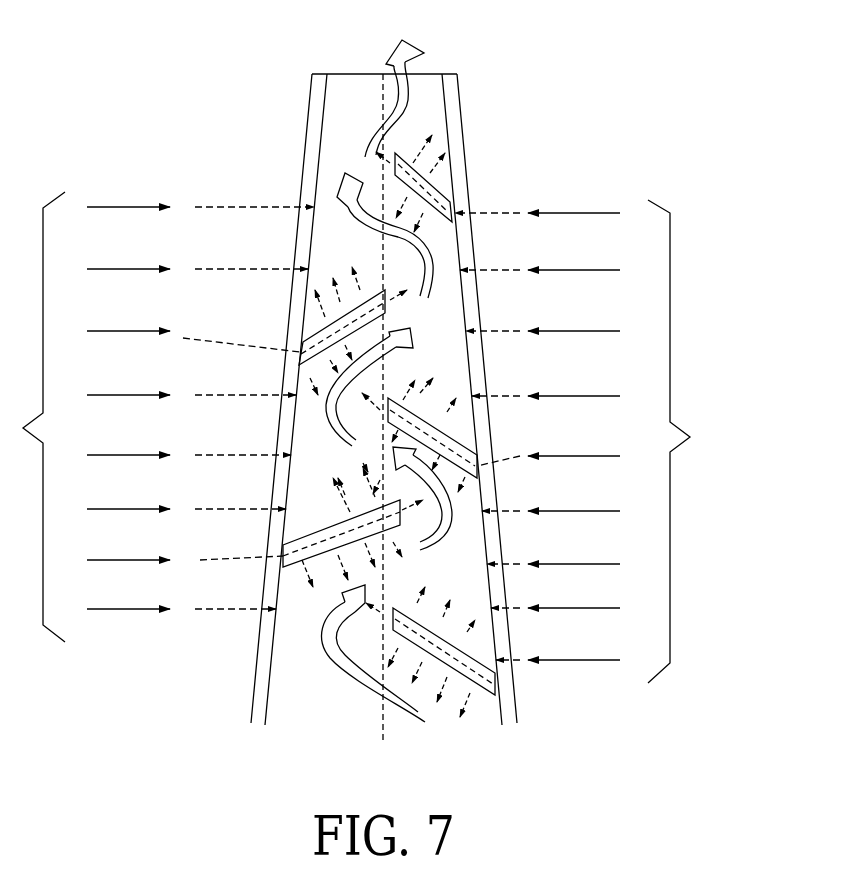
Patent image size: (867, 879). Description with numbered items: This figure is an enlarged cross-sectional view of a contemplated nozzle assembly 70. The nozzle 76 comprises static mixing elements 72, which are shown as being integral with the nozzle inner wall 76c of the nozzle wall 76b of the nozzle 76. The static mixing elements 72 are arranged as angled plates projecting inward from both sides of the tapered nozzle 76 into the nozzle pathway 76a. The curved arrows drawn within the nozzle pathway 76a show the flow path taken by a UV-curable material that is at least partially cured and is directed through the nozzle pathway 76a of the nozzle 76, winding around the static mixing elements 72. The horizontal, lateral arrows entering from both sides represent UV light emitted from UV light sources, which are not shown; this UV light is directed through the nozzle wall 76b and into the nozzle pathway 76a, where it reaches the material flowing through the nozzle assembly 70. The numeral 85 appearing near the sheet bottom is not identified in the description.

The nozzle assembly 70 is at (625, 158).
The static mixing elements 72 is at (440, 184).
The nozzle 76 is at (303, 162).
The nozzle pathway 76a is at (308, 687).
The nozzle wall 76b is at (442, 78).
The nozzle inner wall 76c is at (327, 98).
The sheet numeral 85 is at (168, 866).